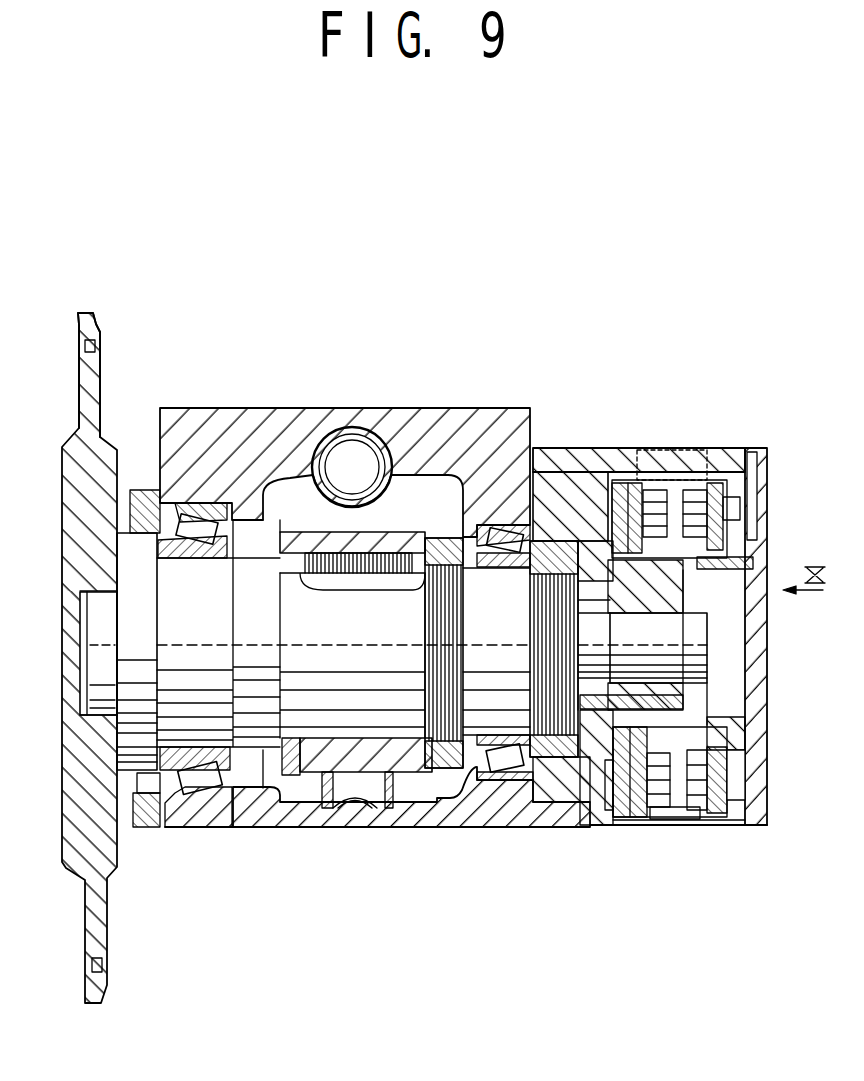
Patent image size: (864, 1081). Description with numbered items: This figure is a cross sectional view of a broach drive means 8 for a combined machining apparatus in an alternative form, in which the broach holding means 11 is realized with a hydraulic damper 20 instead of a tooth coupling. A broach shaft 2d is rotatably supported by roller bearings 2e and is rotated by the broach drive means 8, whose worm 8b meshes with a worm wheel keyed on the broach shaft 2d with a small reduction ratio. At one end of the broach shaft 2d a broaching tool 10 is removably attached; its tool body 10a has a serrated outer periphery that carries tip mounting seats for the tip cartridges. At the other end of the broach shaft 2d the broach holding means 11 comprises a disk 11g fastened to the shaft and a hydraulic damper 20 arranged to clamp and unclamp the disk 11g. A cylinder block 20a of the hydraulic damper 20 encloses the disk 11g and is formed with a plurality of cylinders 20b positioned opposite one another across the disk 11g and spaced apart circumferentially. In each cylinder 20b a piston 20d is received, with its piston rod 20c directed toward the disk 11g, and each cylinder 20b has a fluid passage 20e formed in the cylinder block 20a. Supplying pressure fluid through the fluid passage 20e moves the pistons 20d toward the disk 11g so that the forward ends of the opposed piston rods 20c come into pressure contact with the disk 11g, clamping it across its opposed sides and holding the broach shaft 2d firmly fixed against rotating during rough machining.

The broach shaft 2d is at (312, 735).
The roller bearing 2e is at (205, 778).
The broach drive means 8 is at (457, 408).
The worm 8b is at (350, 448).
The broaching tool 10 is at (63, 551).
The tool body 10a is at (66, 457).
The broach holding means 11 is at (620, 471).
The disk 11g is at (672, 500).
The hydraulic damper 20 is at (707, 828).
The cylinder block 20a is at (693, 813).
The cylinder 20b is at (612, 773).
The piston rod 20c is at (680, 490).
The piston 20d is at (620, 497).
The fluid passage 20e is at (635, 453).